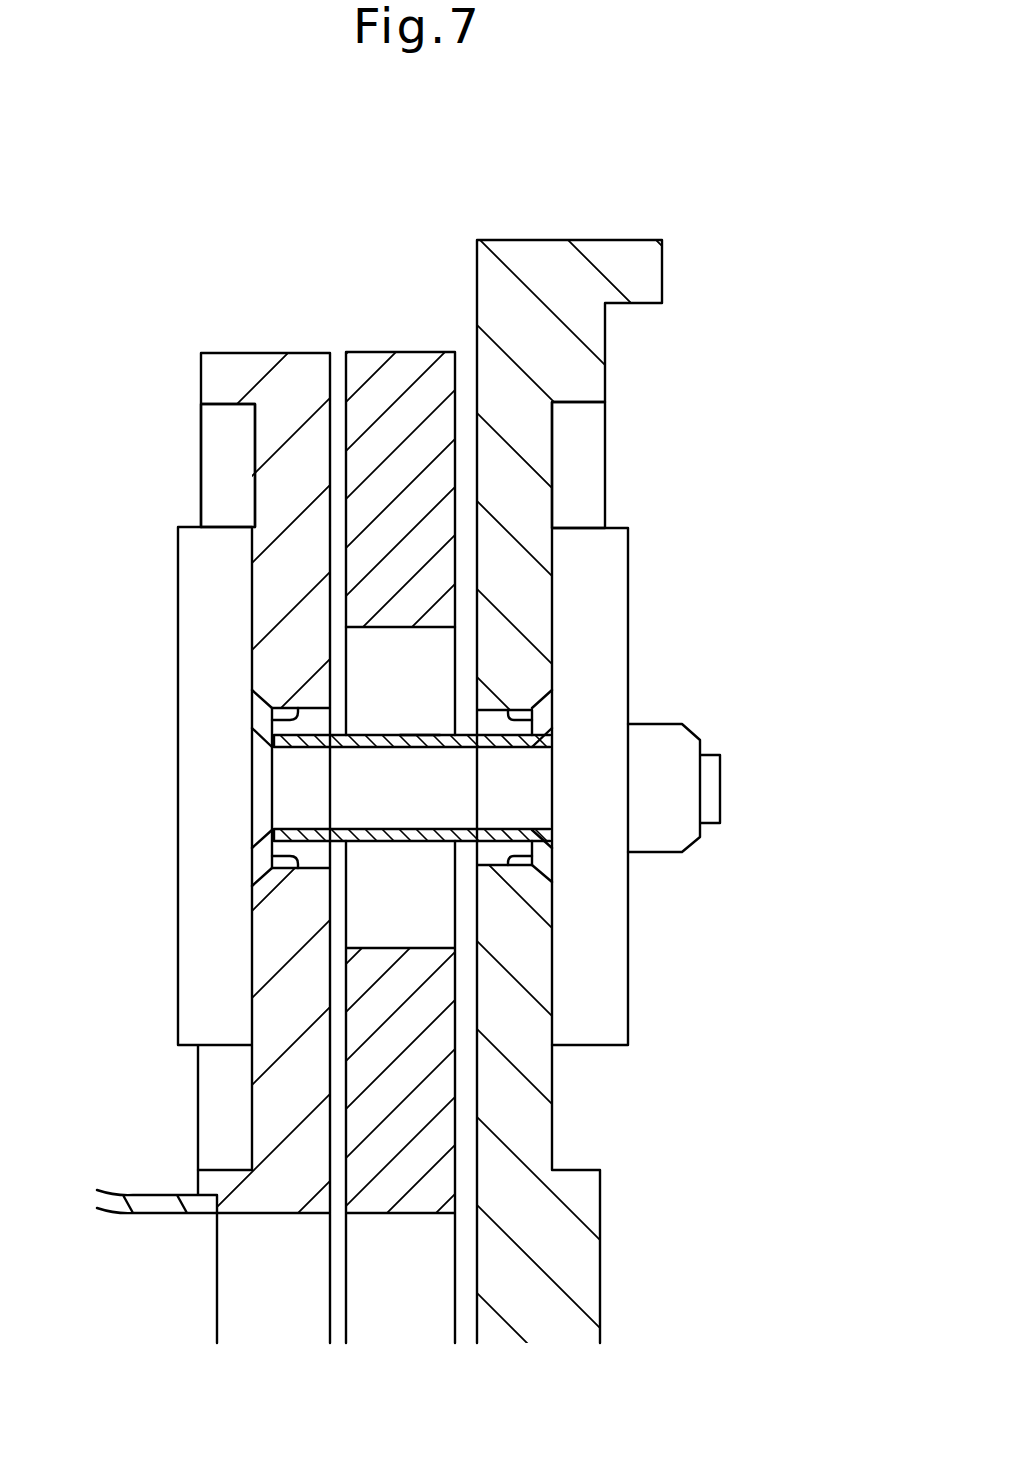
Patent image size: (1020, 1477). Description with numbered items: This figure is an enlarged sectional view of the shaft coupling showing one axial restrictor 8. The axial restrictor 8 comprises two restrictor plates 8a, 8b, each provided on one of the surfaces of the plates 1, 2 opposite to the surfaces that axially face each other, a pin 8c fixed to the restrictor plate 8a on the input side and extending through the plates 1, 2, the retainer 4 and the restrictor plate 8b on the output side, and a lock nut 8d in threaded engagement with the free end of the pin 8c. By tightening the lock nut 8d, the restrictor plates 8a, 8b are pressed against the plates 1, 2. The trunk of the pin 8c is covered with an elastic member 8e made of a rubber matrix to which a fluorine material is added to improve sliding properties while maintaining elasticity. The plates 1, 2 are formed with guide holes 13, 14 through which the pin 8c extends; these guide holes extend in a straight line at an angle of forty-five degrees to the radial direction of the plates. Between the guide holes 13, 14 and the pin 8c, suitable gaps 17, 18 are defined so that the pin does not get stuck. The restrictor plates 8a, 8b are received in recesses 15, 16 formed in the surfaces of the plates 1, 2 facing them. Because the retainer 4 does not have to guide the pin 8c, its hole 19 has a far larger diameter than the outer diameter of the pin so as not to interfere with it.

The plate 1 is at (218, 380).
The plate 2 is at (527, 240).
The retainer 4 is at (368, 362).
The axial restrictor 8 is at (443, 842).
The restrictor plate 8a is at (205, 963).
The restrictor plate 8b is at (600, 967).
The pin 8c is at (345, 800).
The lock nut 8d is at (668, 835).
The elastic member 8e is at (420, 733).
The guide hole 13 is at (273, 710).
The guide hole 14 is at (522, 727).
The recess 15 is at (255, 440).
The recess 16 is at (553, 457).
The gap 17 is at (305, 727).
The gap 18 is at (545, 727).
The hole 19 is at (413, 627).